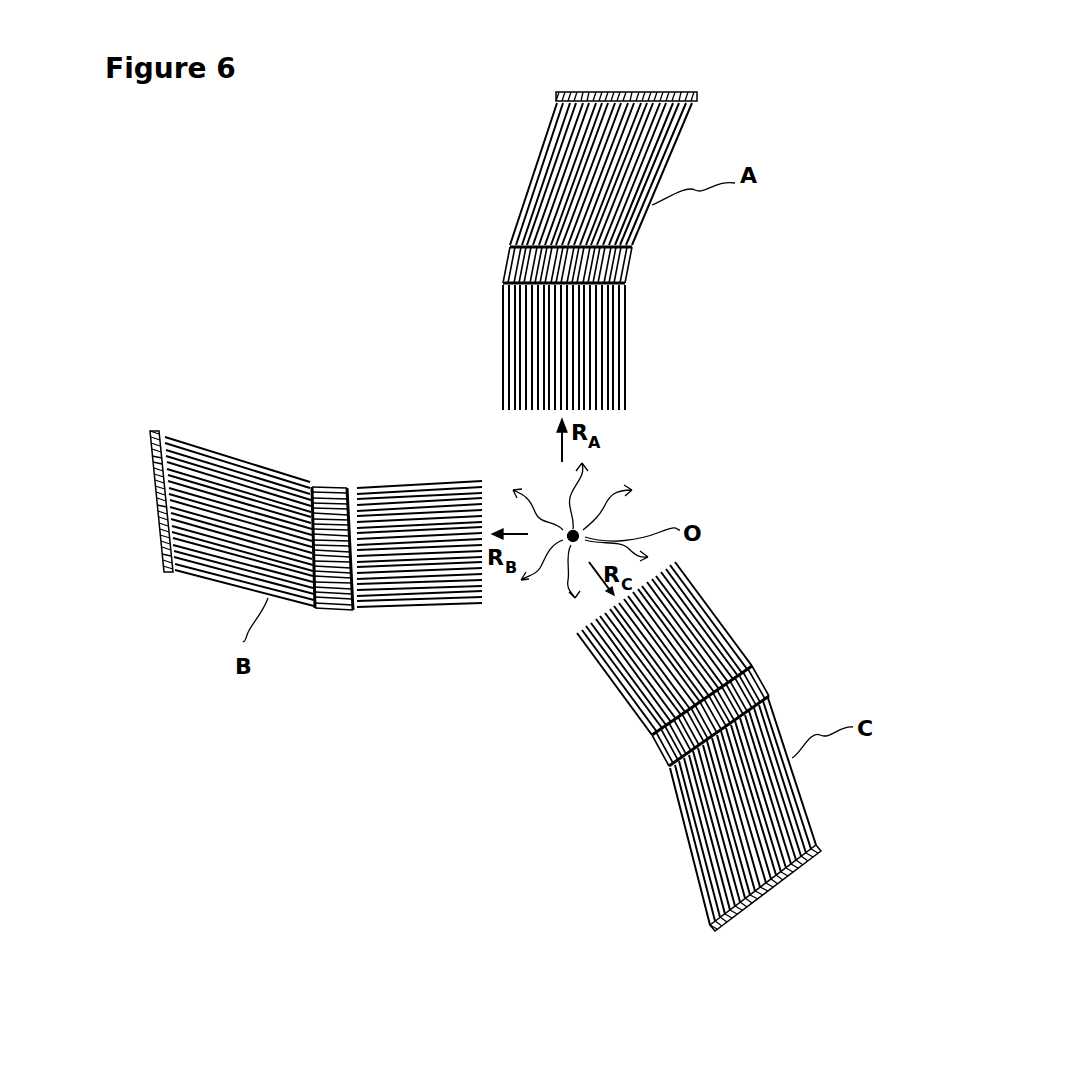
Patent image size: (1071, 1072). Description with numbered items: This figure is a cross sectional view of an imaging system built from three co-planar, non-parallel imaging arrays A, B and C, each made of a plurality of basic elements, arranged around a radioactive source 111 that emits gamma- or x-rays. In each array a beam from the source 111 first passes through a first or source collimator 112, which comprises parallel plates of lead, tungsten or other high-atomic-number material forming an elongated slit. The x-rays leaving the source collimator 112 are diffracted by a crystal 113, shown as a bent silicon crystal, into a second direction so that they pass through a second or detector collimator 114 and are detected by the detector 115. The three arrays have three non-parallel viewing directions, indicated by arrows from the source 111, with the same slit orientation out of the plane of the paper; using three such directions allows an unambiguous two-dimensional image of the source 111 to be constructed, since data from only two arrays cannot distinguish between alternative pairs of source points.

The radioactive source 111 is at (588, 530).
The first or source collimator 112 is at (385, 475).
The crystal 113 is at (628, 263).
The second or detector collimator 114 is at (668, 148).
The detector 115 is at (630, 93).